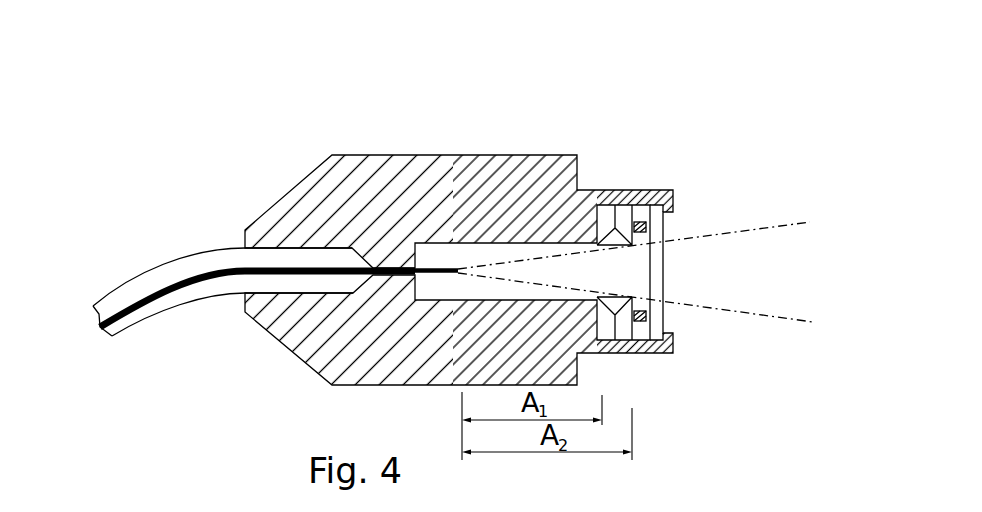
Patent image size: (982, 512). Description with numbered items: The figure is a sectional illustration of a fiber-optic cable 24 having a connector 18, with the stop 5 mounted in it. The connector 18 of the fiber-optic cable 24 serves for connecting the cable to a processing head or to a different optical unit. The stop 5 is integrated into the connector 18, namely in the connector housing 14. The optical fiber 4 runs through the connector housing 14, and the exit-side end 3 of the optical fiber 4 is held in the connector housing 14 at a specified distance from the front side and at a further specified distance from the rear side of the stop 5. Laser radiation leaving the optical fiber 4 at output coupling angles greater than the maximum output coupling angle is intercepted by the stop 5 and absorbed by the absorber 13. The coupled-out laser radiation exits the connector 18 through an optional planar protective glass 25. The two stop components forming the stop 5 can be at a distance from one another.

The connector 18 is at (497, 146).
The connector housing 14 is at (558, 157).
The fiber-optic cable 24 is at (155, 265).
The optical fiber 4 is at (245, 243).
The exit-side end 3 is at (460, 263).
The absorber 13 is at (623, 192).
The stop 5 is at (665, 225).
The planar protective glass 25 is at (668, 238).